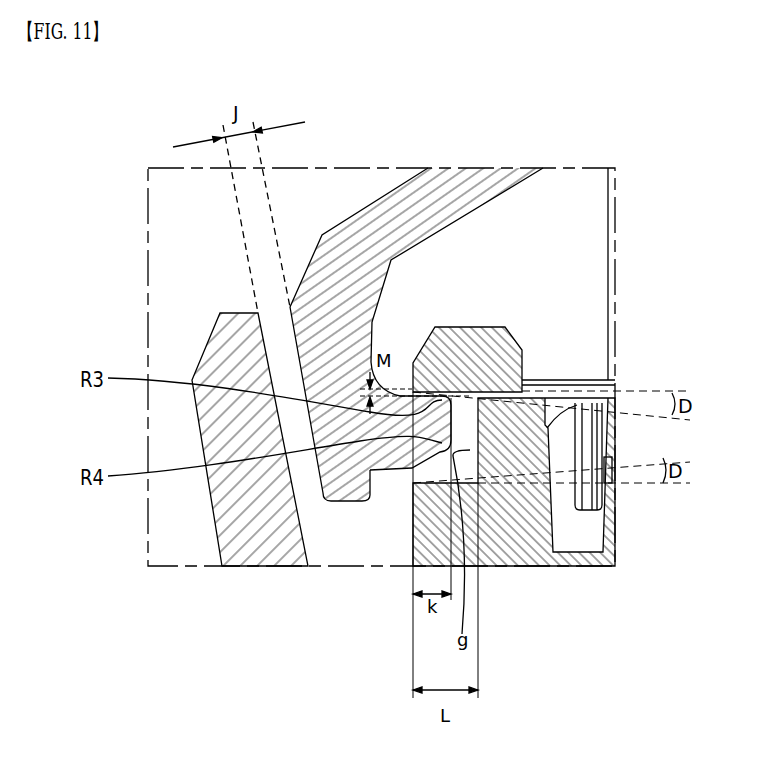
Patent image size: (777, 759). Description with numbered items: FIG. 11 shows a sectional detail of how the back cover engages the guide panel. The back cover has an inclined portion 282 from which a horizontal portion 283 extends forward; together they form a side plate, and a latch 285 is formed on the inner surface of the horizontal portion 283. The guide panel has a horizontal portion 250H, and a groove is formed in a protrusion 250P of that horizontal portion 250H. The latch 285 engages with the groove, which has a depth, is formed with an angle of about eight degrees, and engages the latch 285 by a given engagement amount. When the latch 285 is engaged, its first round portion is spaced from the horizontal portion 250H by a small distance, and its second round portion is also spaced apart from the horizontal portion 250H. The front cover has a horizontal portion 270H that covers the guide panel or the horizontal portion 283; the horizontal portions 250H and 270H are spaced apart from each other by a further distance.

The inclined portion 282 is at (395, 206).
The horizontal portion 283 is at (363, 331).
The latch 285 is at (393, 452).
The protrusion 250P is at (506, 341).
The horizontal portion 250H is at (517, 543).
The horizontal portion 270H is at (237, 518).